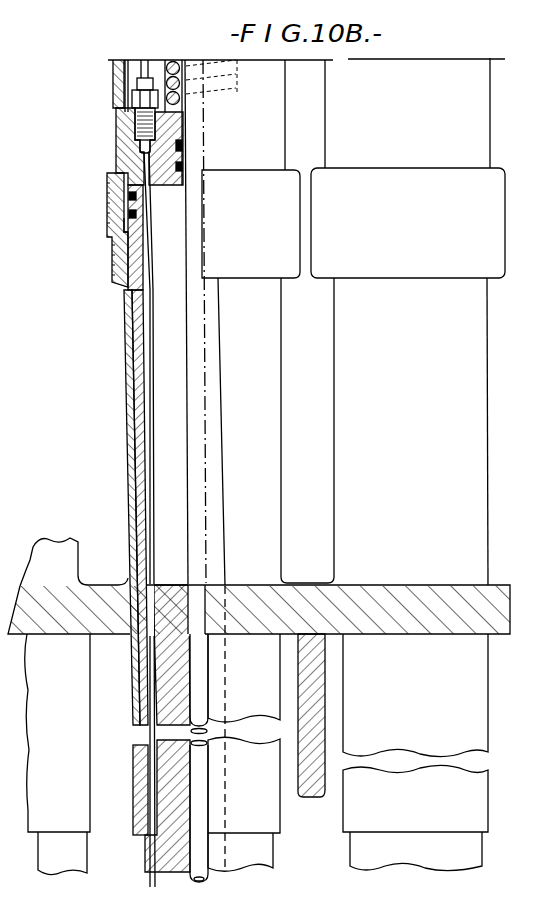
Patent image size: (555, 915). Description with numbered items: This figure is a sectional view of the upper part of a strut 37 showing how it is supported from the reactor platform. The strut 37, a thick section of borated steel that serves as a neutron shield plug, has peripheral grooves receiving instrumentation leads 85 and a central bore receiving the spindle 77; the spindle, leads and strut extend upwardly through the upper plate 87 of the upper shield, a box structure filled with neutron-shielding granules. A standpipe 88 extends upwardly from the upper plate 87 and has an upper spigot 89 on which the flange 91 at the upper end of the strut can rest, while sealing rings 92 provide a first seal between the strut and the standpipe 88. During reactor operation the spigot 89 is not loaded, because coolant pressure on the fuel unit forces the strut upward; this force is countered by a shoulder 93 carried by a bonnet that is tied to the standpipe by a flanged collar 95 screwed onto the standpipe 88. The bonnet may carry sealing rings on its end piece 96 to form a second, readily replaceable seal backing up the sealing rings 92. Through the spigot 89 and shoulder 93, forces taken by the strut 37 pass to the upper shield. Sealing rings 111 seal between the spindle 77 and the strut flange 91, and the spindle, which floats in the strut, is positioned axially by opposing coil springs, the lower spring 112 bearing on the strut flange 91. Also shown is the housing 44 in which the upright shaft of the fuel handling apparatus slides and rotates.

The housing 44 is at (113, 73).
The shoulder 93 is at (131, 101).
The flange 91 is at (118, 157).
The flanged collar 95 is at (108, 182).
The end piece 96 is at (126, 196).
The spigot 89 is at (128, 212).
The sealing rings 92 is at (117, 222).
The instrumentation leads 85 is at (140, 307).
The standpipe 88 is at (128, 450).
The upper plate 87 is at (98, 603).
The strut 37 is at (145, 797).
The spindle 77 is at (204, 847).
The lower coil spring 112 is at (180, 98).
The sealing rings 111 is at (184, 147).